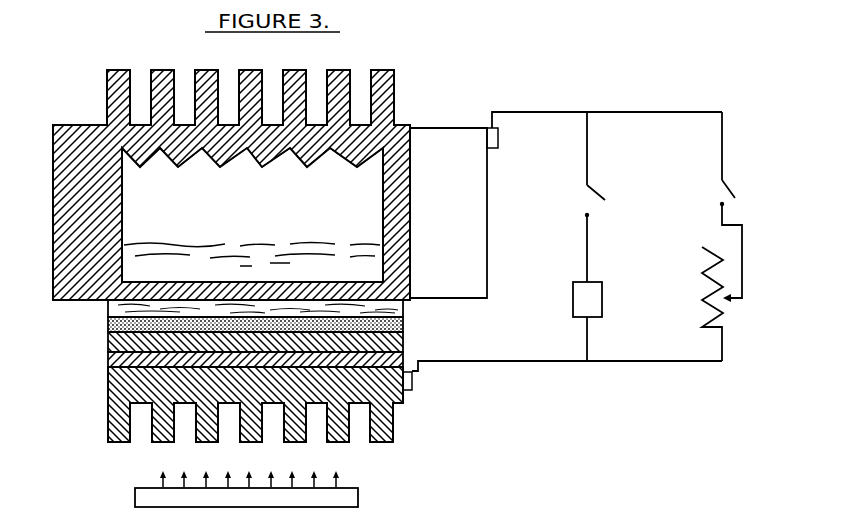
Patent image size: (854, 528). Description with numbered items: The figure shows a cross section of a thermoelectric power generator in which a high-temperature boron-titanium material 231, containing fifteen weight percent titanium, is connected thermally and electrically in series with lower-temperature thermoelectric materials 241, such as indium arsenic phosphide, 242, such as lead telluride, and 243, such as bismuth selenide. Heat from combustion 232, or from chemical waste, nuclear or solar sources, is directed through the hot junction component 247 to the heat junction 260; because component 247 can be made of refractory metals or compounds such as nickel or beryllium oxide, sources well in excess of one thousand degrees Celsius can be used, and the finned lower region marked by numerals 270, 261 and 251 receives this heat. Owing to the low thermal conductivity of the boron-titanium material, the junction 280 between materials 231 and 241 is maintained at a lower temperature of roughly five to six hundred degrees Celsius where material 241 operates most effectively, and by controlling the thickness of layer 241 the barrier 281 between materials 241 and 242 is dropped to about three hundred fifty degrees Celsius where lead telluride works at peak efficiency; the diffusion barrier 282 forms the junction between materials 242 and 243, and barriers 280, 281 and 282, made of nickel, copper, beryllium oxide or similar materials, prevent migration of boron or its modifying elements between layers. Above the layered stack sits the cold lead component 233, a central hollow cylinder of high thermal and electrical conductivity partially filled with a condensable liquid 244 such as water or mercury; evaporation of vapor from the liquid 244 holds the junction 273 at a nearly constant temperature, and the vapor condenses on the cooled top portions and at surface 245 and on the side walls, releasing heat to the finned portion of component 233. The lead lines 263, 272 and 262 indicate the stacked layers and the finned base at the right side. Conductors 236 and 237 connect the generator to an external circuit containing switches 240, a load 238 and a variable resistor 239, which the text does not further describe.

The cold lead component 233 is at (392, 70).
The condensing surface 245 is at (252, 170).
The condensable liquid 244 is at (252, 259).
The lower-temperature thermoelectric material (bismuth selenide) 243 is at (108, 306).
The diffusion barrier 282 is at (108, 314).
The lower-temperature thermoelectric material (lead telluride) 242 is at (108, 323).
The diffusion barrier 281 is at (108, 332).
The lower-temperature thermoelectric material (indium arsenic phosphide) 241 is at (108, 341).
The diffusion barrier junction 280 is at (108, 351).
The high-temperature boron-titanium material 231 is at (108, 364).
The heat junction 260 is at (108, 380).
The fin 270 is at (108, 403).
The fin root 261 is at (132, 406).
The base 251 is at (143, 393).
The hot junction component 247 is at (380, 436).
The junction 273 is at (366, 300).
The layer boundary 263 is at (362, 332).
The base edge 272 is at (385, 380).
The fin edge 262 is at (393, 413).
The heat from combustion 232 is at (246, 478).
The conductor 236 is at (563, 96).
The conductor 237 is at (513, 361).
The switch 240 is at (675, 207).
The load 238 is at (609, 321).
The variable resistor 239 is at (696, 304).